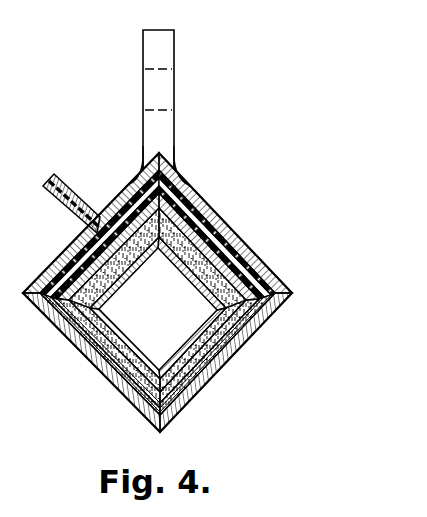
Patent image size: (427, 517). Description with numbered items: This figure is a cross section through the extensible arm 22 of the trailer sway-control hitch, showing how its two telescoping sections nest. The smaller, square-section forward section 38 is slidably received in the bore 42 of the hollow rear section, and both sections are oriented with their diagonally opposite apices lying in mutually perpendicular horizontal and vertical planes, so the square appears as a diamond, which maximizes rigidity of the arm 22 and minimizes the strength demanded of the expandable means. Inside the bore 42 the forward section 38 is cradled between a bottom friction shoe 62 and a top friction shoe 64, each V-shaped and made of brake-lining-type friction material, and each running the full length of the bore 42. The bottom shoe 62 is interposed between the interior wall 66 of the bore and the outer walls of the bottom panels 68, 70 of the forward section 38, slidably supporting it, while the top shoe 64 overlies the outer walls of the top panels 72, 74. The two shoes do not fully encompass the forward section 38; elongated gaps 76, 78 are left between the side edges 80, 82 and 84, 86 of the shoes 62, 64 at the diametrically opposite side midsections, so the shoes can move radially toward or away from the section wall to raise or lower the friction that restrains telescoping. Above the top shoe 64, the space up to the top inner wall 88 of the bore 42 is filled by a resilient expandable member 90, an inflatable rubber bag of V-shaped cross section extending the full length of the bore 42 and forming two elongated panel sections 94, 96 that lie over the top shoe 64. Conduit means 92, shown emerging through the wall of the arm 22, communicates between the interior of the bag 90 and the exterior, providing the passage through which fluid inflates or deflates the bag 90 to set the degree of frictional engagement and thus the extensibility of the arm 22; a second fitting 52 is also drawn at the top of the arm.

The arm 22 is at (200, 191).
The forward section 38 is at (110, 392).
The bore 42 is at (60, 329).
The outlet tube 52 is at (175, 58).
The bottom friction shoe 62 is at (208, 375).
The top friction shoe 64 is at (246, 246).
The interior wall 66 is at (185, 408).
The bottom panel 68 is at (188, 346).
The bottom panel 70 is at (113, 337).
The top panel 72 is at (129, 278).
The top panel 74 is at (205, 289).
The elongated gap 76 is at (258, 324).
The elongated gap 78 is at (99, 312).
The side edge 80 is at (243, 344).
The side edge 82 is at (262, 273).
The side edge 84 is at (75, 344).
The side edge 86 is at (51, 268).
The top inner wall 88 is at (127, 198).
The resilient expandable member 90 is at (213, 200).
The conduit means 92 is at (47, 196).
The panel section 94 is at (222, 222).
The panel section 96 is at (70, 247).